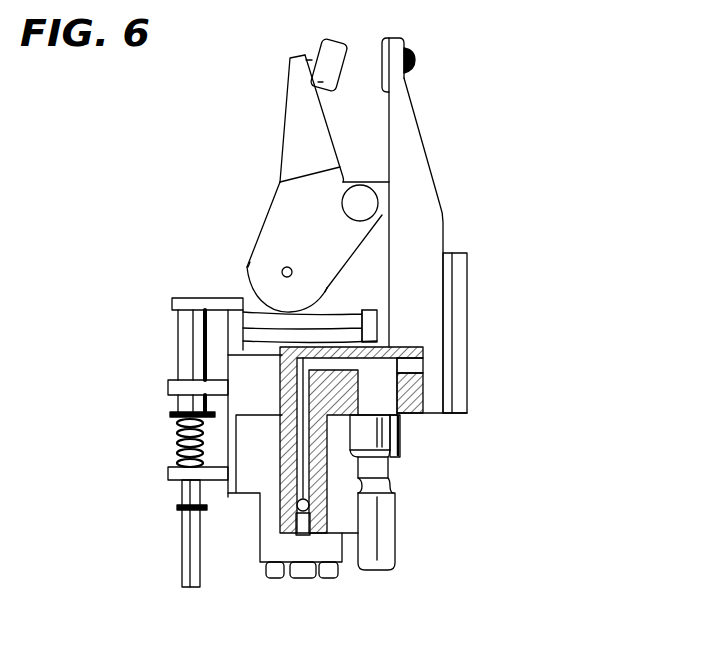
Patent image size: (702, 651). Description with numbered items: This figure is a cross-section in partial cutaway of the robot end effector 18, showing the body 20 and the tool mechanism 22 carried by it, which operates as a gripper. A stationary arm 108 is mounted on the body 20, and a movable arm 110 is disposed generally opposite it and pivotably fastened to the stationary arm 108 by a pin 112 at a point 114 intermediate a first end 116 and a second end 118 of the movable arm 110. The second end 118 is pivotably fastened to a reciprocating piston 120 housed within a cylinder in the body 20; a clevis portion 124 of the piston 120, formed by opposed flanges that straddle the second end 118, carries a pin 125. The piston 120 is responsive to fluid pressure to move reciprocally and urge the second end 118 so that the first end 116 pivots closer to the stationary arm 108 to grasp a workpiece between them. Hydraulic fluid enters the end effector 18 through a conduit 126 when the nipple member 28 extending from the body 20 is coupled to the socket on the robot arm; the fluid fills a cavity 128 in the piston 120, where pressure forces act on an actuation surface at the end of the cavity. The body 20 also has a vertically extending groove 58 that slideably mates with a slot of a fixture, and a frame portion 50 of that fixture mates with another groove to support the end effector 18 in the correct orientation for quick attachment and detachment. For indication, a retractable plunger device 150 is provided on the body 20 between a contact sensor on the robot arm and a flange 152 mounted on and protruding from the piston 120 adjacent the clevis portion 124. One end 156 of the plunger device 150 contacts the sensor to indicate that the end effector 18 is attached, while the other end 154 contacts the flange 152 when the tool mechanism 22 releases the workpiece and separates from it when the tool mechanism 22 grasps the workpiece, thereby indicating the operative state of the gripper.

The end effector 18 is at (640, 96).
The body 20 is at (432, 399).
The tool mechanism 22 is at (196, 161).
The nipple member 28 is at (398, 453).
The portion of frame 50 is at (398, 538).
The groove 58 is at (448, 253).
The stationary arm 108 is at (411, 134).
The movable arm 110 is at (266, 205).
The pin 112 is at (374, 215).
The point 114 is at (340, 178).
The first end 116 is at (293, 82).
The second end 118 is at (261, 280).
The piston 120 is at (246, 350).
The clevis portion 124 is at (245, 261).
The pin 125 is at (290, 266).
The conduit 126 is at (402, 427).
The cavity 128 is at (283, 404).
The plunger device 150 is at (177, 457).
The flange 152 is at (172, 302).
The end of plunger device 154 is at (172, 326).
The end of plunger device 156 is at (178, 548).